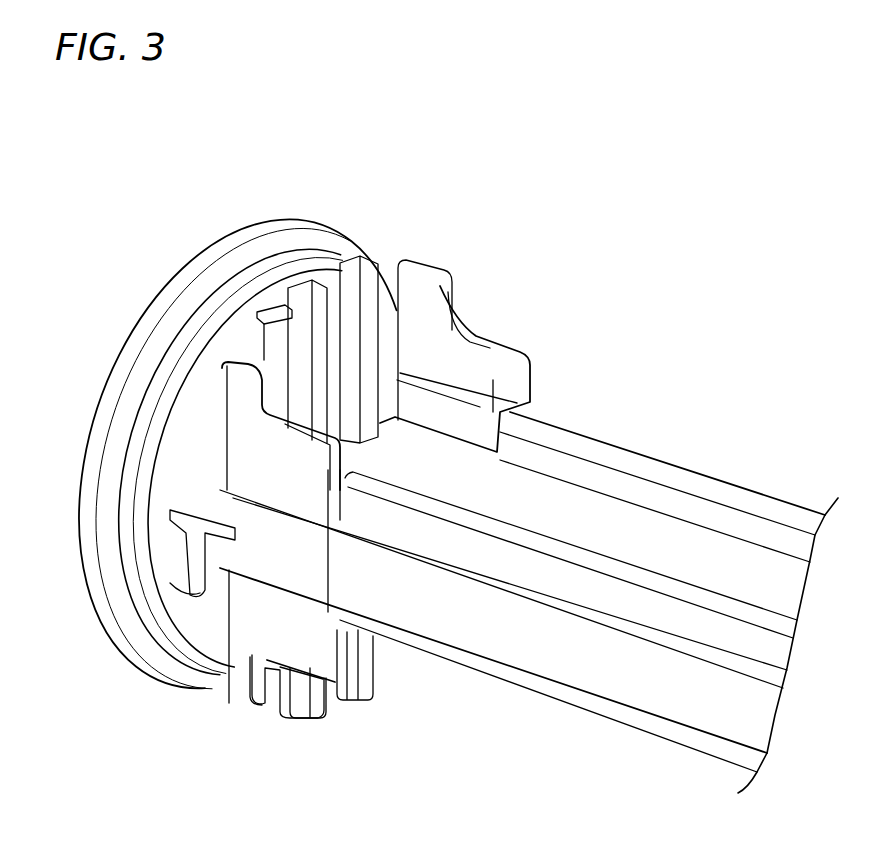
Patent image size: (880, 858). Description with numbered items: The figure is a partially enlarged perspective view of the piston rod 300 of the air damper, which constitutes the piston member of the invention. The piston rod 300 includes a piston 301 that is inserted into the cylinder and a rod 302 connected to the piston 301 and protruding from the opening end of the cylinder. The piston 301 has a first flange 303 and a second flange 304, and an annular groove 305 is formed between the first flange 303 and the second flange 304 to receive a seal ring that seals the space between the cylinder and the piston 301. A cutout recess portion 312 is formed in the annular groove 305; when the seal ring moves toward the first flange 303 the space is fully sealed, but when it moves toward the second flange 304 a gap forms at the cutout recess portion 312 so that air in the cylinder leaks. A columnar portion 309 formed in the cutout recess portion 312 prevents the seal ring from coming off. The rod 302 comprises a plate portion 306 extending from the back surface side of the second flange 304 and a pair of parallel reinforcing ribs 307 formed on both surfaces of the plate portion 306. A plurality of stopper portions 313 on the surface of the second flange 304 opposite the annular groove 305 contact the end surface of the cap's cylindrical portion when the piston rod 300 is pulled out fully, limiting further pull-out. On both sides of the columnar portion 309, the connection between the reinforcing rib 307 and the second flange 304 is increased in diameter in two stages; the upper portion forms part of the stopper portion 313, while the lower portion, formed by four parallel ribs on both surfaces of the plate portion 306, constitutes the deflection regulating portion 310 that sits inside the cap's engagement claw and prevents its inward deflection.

The piston rod 300 is at (560, 293).
The piston 301 is at (208, 154).
The rod 302 is at (578, 424).
The first flange 303 is at (223, 250).
The second flange 304 is at (185, 410).
The annular groove 305 is at (207, 330).
The plate portion 306 is at (618, 515).
The reinforcing ribs 307 is at (738, 504).
The columnar portion 309 is at (308, 288).
The deflection regulating portion 310 is at (291, 428).
The cutout recess portion 312 is at (275, 300).
The stopper portions 313 is at (263, 355).